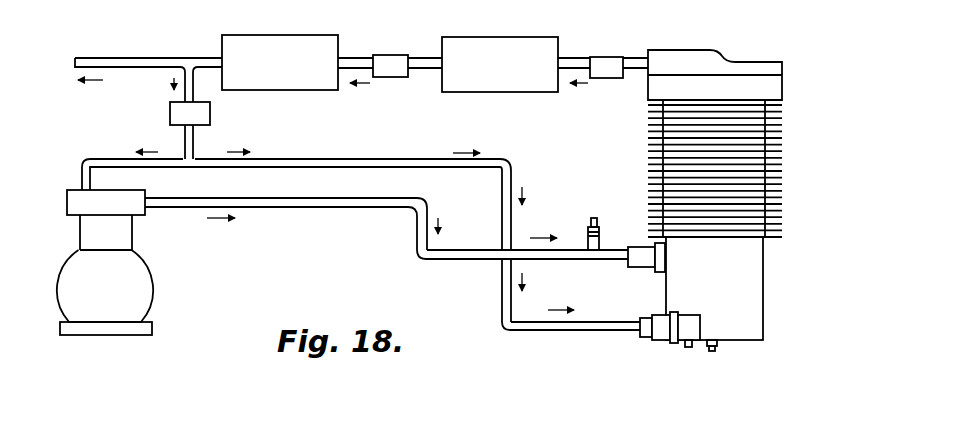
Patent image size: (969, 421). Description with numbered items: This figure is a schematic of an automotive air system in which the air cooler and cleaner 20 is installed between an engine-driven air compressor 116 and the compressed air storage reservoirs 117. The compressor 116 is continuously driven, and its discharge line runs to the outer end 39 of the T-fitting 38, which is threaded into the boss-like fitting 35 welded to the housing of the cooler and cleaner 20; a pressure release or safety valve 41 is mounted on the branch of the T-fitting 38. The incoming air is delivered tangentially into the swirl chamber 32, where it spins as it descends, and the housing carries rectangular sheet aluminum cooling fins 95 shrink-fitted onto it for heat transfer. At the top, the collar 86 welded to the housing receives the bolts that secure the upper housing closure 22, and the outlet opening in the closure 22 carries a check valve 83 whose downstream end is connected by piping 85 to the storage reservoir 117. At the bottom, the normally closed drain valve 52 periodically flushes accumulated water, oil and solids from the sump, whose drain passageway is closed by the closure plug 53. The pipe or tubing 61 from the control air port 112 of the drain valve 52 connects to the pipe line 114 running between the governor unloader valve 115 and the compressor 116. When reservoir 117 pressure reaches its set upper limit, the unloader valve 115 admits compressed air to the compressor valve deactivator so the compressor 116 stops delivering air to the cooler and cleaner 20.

The air cooler and cleaner 20 is at (708, 202).
The upper housing closure 22 is at (762, 68).
The swirl chamber 32 is at (714, 288).
The boss-like fitting 35 is at (645, 268).
The T-fitting 38 is at (600, 250).
The outer end of T-fitting 39 is at (318, 208).
The safety valve 41 is at (596, 218).
The drain valve 52 is at (690, 323).
The closure plug 53 is at (717, 348).
The pipe or tubing 61 is at (340, 158).
The check valve 83 is at (404, 55).
The piping or tubing 85 is at (572, 58).
The ring or collar 86 is at (783, 92).
The cooling fins 95 is at (783, 135).
The control air port 112 is at (636, 337).
The pipe line 114 is at (95, 157).
The governor unloader valve 115 is at (170, 110).
The air compressor 116 is at (152, 300).
The storage reservoir 117 is at (244, 35).